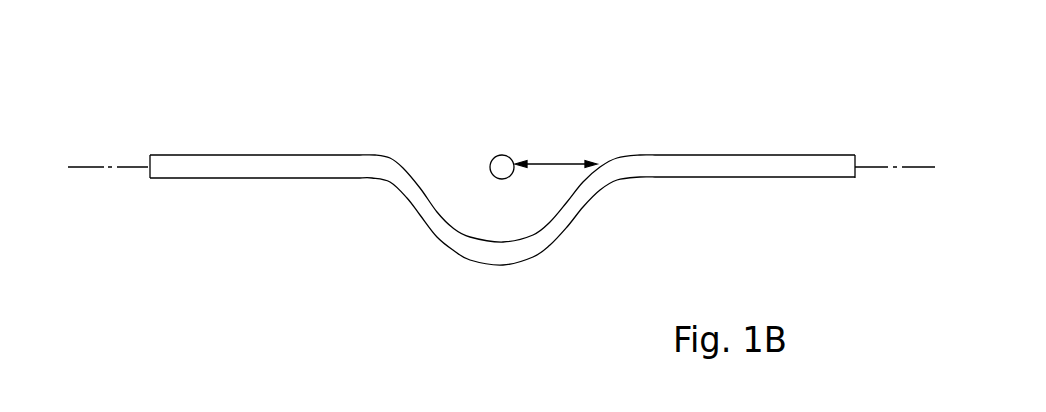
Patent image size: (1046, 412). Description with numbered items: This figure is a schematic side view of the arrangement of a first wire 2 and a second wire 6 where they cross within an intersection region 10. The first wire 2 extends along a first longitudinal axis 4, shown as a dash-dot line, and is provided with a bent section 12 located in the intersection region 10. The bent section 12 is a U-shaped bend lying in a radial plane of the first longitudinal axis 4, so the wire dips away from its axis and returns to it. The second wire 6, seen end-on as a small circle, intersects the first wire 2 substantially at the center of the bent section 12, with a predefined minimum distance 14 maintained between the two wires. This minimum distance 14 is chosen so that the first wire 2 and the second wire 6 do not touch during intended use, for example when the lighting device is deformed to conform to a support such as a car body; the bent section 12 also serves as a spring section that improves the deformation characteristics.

The intersection region 10 is at (476, 100).
The first wire 2 is at (747, 167).
The first longitudinal axis 4 is at (920, 167).
The second wire 6 is at (498, 166).
The bent section 12 is at (438, 282).
The minimum distance 14 is at (555, 163).